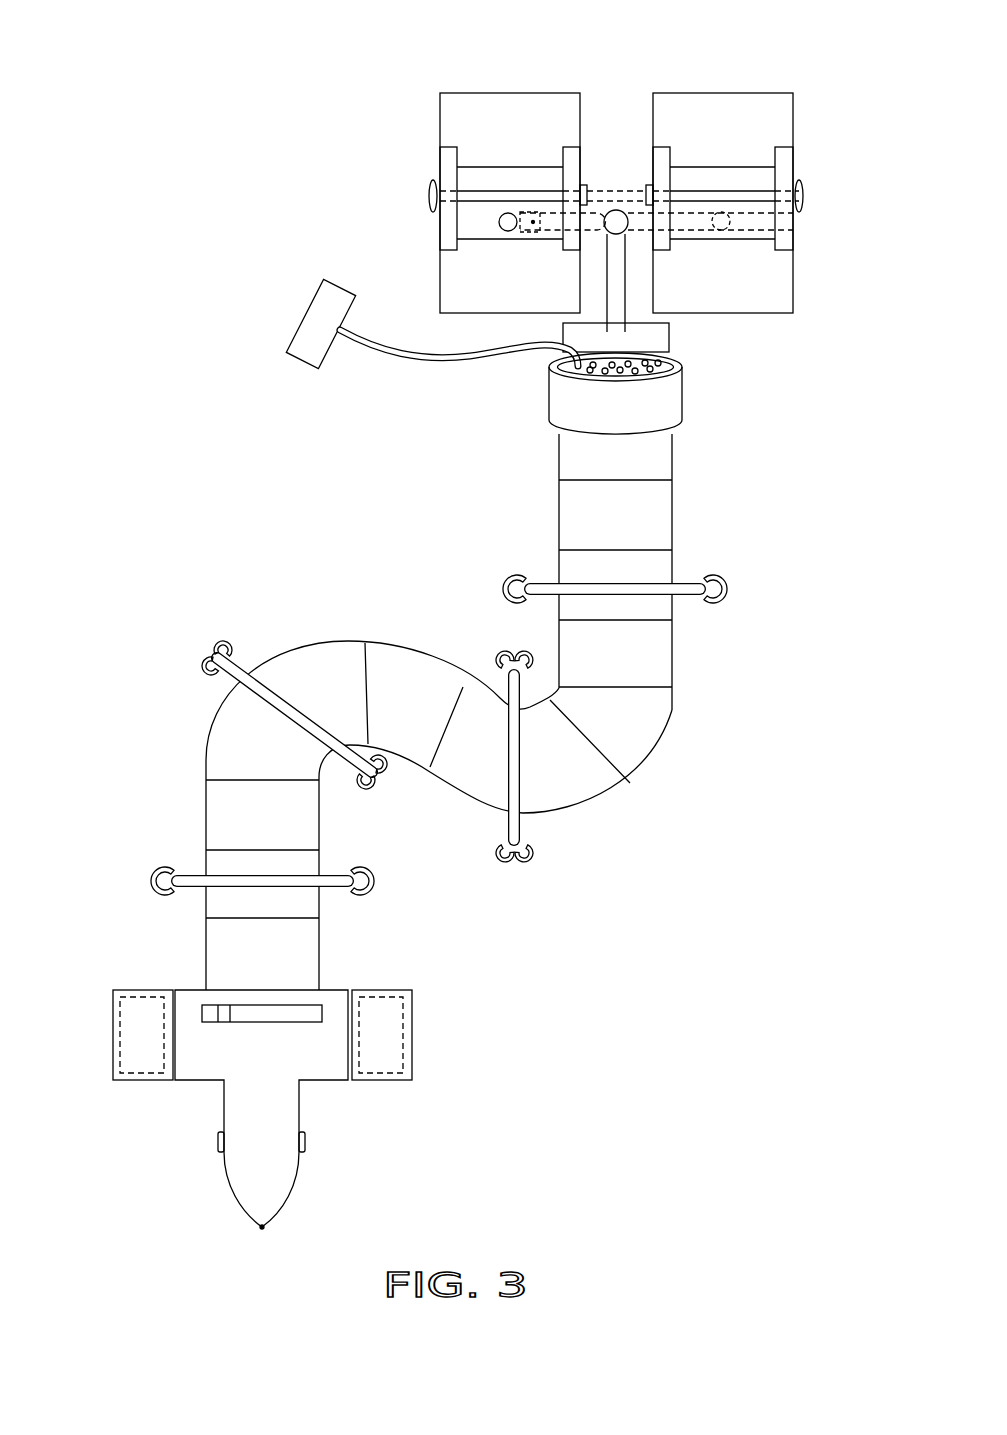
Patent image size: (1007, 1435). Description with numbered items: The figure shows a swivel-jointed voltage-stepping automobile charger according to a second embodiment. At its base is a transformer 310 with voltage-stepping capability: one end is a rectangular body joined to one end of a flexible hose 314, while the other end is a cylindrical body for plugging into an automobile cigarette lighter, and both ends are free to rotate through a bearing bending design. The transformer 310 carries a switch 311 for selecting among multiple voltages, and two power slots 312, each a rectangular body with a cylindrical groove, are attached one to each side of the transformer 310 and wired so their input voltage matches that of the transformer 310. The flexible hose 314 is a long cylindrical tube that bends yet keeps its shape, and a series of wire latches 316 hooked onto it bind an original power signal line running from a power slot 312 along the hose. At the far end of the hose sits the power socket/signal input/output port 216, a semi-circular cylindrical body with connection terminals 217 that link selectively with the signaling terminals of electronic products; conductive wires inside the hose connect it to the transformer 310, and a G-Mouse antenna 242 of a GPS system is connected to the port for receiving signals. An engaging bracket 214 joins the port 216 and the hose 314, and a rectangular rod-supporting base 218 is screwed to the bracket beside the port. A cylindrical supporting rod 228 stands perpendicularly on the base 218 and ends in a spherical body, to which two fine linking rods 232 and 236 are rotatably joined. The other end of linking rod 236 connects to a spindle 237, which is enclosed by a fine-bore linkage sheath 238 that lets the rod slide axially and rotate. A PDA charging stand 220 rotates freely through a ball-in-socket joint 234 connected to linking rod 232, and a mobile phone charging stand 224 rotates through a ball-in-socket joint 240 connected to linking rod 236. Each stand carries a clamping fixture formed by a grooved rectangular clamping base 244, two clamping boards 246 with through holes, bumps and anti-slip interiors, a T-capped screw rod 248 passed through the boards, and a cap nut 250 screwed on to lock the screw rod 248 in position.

The mobile phone charging stand 224 is at (580, 94).
The PDA charging stand 220 is at (775, 93).
The clamping board 246 is at (448, 156).
The screw rod 248 is at (430, 186).
The cap nut 250 is at (648, 186).
The ball-in-socket joint 234 is at (720, 222).
The ball-in-socket joint 240 is at (500, 222).
The clamping base 244 is at (522, 166).
The linkage sheath 238 is at (537, 210).
The linking rod 236 is at (545, 212).
The spindle 237 is at (520, 213).
The linking rod 232 is at (692, 213).
The supporting rod 228 is at (618, 281).
The rod-supporting base 218 is at (660, 339).
The G-Mouse antenna 242 is at (296, 343).
The engaging bracket 214 is at (656, 408).
The power socket/signal input/output port 216 is at (672, 365).
The connection terminals 217 is at (587, 370).
The flexible hose 314 is at (660, 762).
The wire latches 316 is at (716, 580).
The transformer 310 is at (297, 1052).
The switch 311 is at (322, 1008).
The power slots 312 is at (130, 1040).